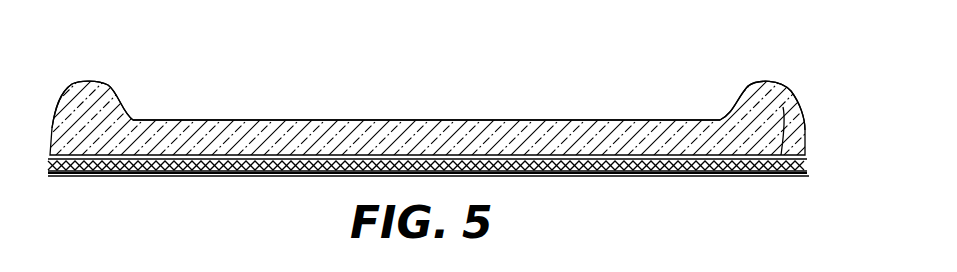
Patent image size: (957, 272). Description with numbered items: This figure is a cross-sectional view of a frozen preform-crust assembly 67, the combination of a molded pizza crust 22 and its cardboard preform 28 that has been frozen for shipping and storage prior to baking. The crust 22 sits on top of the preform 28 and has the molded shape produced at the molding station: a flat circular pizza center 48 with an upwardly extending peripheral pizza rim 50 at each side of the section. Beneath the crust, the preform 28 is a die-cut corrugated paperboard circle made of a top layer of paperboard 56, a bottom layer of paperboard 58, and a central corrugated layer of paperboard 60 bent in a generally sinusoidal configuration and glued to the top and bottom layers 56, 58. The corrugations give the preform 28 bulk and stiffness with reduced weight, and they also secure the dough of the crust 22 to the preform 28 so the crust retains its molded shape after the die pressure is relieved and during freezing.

The crust 22 is at (296, 120).
The peripheral pizza rim 50 is at (83, 82).
The top layer of paperboard 56 is at (787, 107).
The flat circular pizza center 48 is at (650, 120).
The preform-crust assembly 67 is at (457, 96).
The central corrugated layer of paperboard 60 is at (806, 163).
The bottom layer of paperboard 58 is at (795, 175).
The preform 28 is at (701, 177).